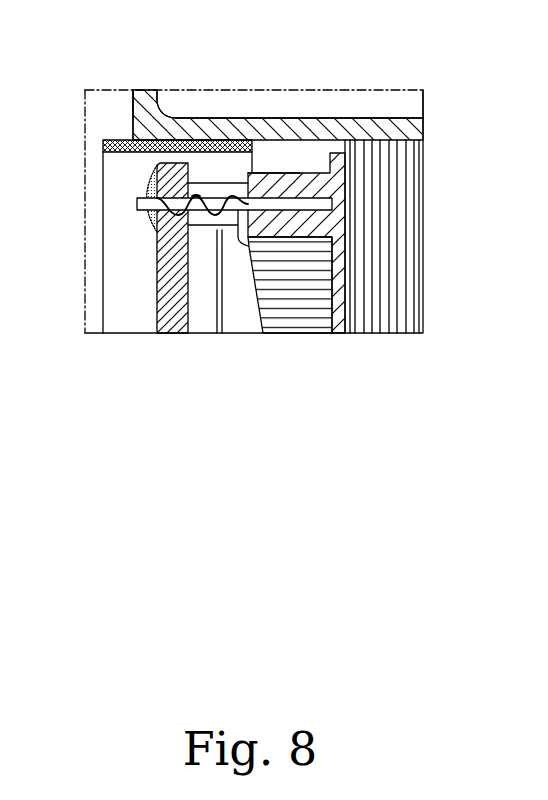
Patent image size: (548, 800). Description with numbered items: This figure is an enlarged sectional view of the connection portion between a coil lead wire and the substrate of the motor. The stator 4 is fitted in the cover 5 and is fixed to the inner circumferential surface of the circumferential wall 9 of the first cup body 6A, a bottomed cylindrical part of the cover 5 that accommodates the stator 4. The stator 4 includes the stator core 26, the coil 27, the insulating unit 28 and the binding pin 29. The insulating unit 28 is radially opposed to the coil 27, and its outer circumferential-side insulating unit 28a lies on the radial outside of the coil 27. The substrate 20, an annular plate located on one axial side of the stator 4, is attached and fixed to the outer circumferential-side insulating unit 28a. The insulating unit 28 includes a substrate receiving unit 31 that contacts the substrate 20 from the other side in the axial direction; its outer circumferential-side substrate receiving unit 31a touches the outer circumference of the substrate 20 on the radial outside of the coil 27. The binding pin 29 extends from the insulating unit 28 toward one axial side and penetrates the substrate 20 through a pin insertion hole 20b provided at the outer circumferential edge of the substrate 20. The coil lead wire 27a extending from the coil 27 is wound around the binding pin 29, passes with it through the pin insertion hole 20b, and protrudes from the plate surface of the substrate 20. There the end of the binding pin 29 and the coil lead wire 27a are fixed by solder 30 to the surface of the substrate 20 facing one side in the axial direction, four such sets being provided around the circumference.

The stator 4 is at (425, 266).
The cover 5 is at (407, 107).
The first cup body 6A is at (369, 119).
The circumferential wall 9 is at (352, 118).
The substrate 20 is at (157, 298).
The pin insertion hole 20b is at (152, 132).
The stator core 26 is at (404, 213).
The coil 27 is at (298, 310).
The coil lead wire 27a is at (196, 192).
The insulating unit 28 is at (312, 173).
The outer circumferential-side insulating unit 28a is at (280, 173).
The binding pin 29 is at (210, 196).
The solder 30 is at (137, 233).
The substrate receiving unit 31 is at (234, 107).
The outer circumferential-side substrate receiving unit 31a is at (224, 196).